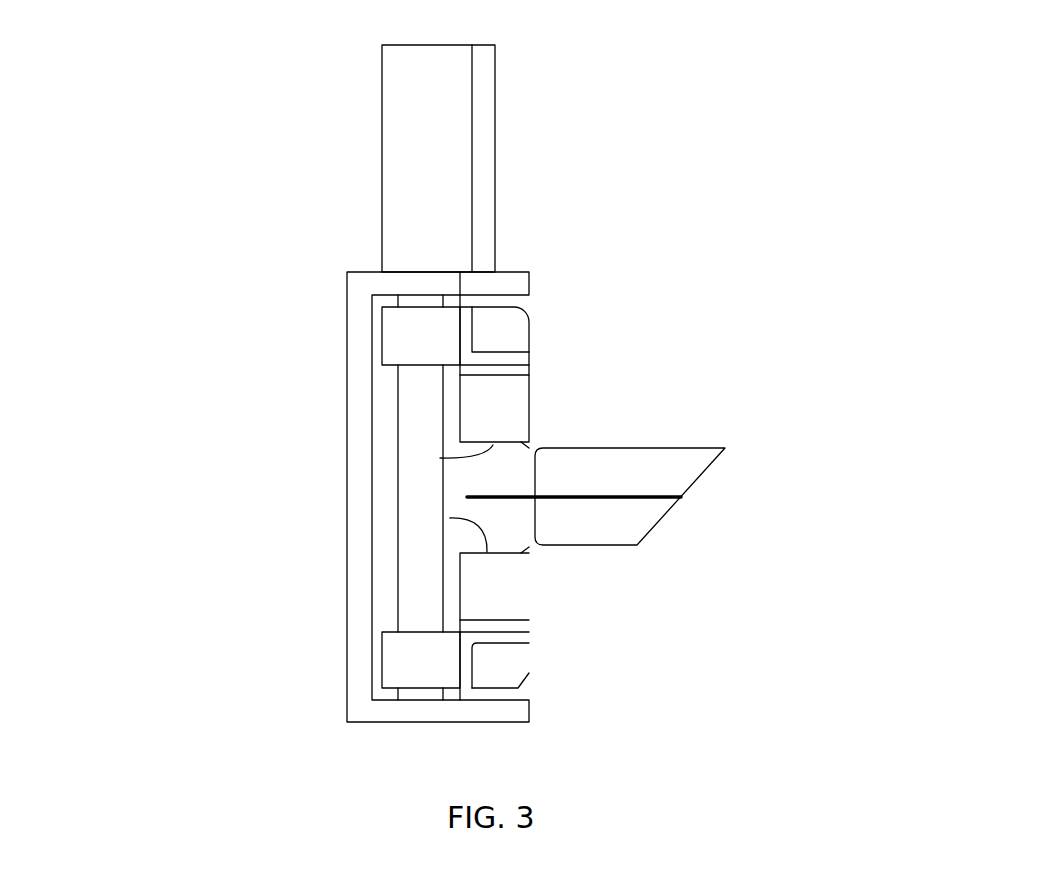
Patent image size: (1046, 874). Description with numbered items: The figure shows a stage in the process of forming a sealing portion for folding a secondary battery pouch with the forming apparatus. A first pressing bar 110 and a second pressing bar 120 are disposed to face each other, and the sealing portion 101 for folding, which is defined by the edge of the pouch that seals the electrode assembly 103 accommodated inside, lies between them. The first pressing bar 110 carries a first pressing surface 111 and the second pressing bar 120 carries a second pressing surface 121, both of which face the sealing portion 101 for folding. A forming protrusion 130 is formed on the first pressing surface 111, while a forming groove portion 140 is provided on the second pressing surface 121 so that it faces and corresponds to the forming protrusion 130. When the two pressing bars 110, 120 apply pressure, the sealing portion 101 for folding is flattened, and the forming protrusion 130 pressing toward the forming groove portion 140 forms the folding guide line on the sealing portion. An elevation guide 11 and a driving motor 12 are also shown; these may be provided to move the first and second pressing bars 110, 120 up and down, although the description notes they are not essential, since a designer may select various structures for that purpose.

The elevation guide 11 is at (410, 495).
The driving motor 12 is at (397, 148).
The sealing portion for folding 101 is at (502, 493).
The electrode assembly 103 is at (678, 462).
The first pressing bar 110 is at (512, 405).
The first pressing surface 111 is at (440, 458).
The second pressing bar 120 is at (527, 600).
The second pressing surface 121 is at (450, 518).
The forming protrusion 130 is at (530, 448).
The forming groove portion 140 is at (530, 547).